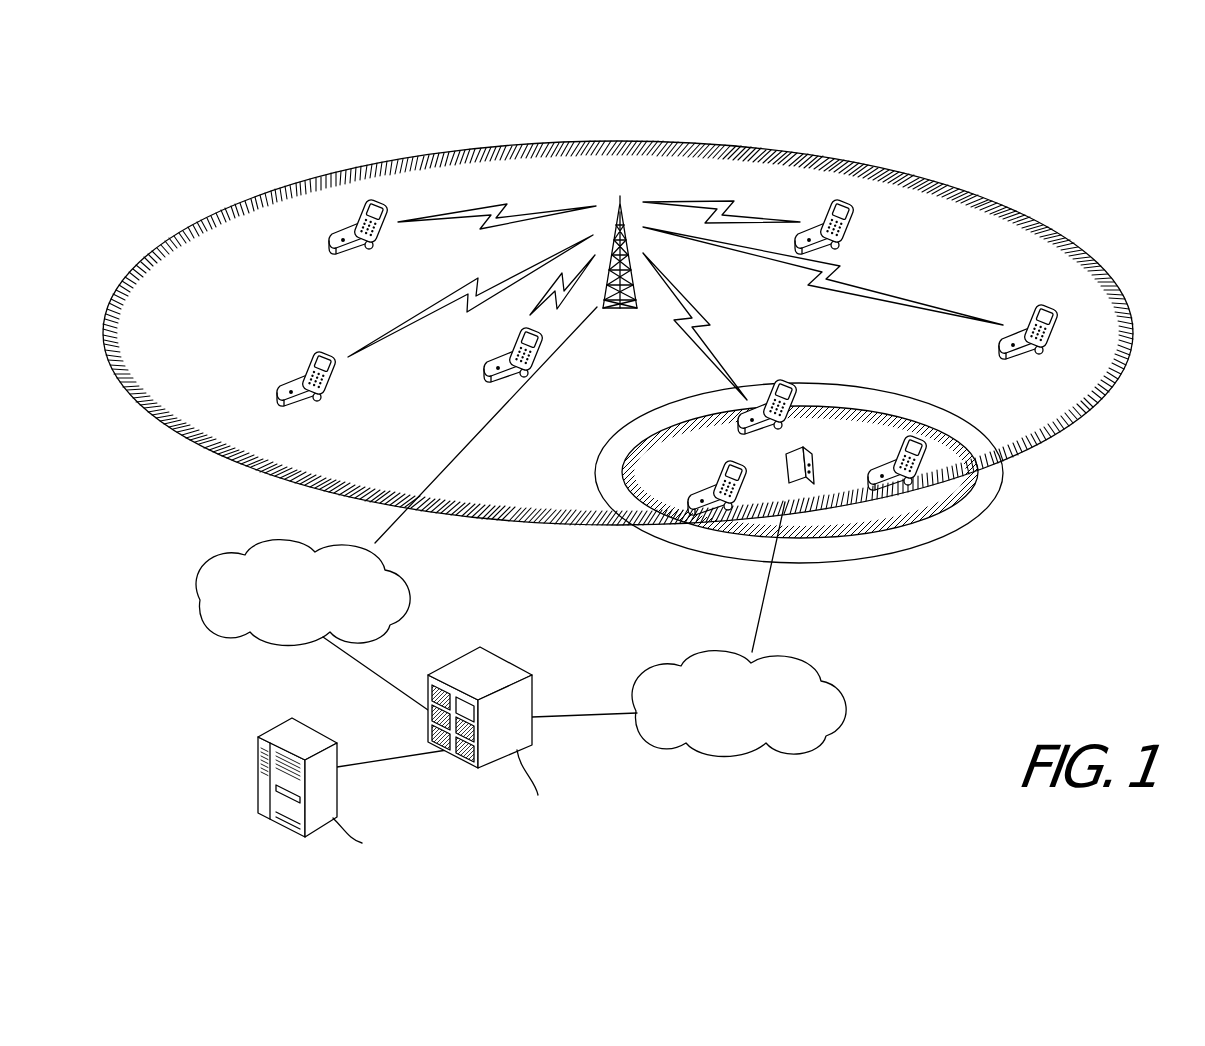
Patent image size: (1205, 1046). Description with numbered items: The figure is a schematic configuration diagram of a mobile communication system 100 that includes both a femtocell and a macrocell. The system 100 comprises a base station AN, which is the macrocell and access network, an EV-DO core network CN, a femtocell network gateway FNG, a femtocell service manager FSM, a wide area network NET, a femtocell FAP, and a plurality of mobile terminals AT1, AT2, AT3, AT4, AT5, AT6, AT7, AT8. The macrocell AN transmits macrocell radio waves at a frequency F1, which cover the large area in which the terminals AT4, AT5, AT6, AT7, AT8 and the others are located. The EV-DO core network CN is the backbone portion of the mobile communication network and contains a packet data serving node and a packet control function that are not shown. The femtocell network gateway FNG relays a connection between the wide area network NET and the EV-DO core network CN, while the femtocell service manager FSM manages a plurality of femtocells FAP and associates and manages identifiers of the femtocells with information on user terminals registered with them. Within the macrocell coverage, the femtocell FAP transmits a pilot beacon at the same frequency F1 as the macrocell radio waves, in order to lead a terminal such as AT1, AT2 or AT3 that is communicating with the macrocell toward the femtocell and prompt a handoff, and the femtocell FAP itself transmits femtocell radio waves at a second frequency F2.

The mobile communication system 100 is at (925, 107).
The base station (macrocell, access network) AN is at (620, 200).
The frequency F1 is at (578, 142).
The frequency F2 is at (850, 562).
The femtocell FAP is at (803, 453).
The terminal (mobile terminal) AT1 is at (1003, 470).
The terminal (mobile terminal) AT2 is at (795, 393).
The terminal (mobile terminal) AT3 is at (742, 480).
The terminal (mobile terminal) AT4 is at (1024, 308).
The terminal (mobile terminal) AT5 is at (852, 230).
The terminal (mobile terminal) AT6 is at (495, 347).
The terminal (mobile terminal) AT7 is at (333, 385).
The terminal (mobile terminal) AT8 is at (365, 200).
The EV-DO core network CN is at (402, 566).
The femtocell network gateway FNG is at (513, 662).
The femtocell service manager FSM is at (322, 735).
The wide area network NET is at (845, 697).